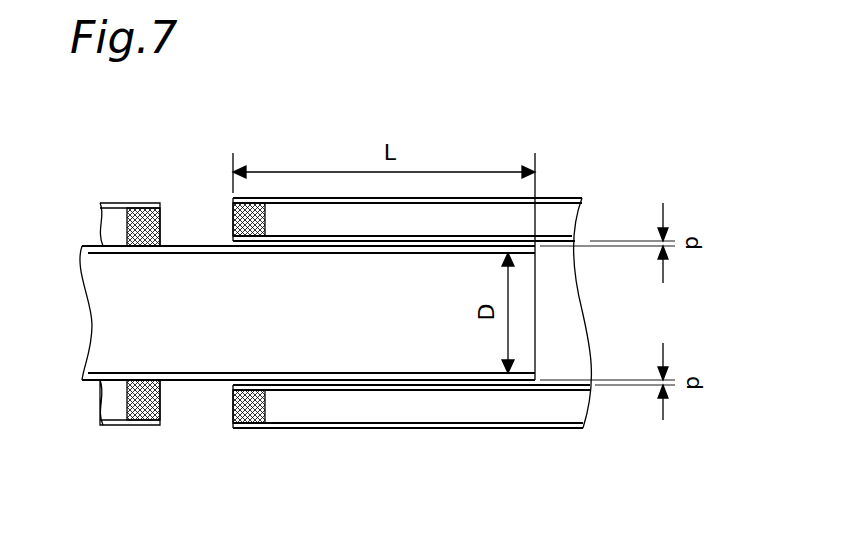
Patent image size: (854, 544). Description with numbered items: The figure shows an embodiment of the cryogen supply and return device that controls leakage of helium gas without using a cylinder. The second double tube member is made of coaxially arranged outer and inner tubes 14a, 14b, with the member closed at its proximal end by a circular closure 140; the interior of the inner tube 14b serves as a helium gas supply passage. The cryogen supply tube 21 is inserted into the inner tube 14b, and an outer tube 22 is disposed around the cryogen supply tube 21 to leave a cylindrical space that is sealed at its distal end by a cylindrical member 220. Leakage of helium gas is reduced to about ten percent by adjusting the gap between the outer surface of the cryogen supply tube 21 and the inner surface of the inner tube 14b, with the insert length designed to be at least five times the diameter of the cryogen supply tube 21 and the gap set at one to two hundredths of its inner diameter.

The cryogen supply tube 21 is at (195, 382).
The outer tube 22 is at (113, 425).
The cylindrical member 220 is at (160, 227).
The outer tube 14a is at (325, 430).
The inner tube 14b is at (397, 380).
The circular closure 140 is at (233, 407).